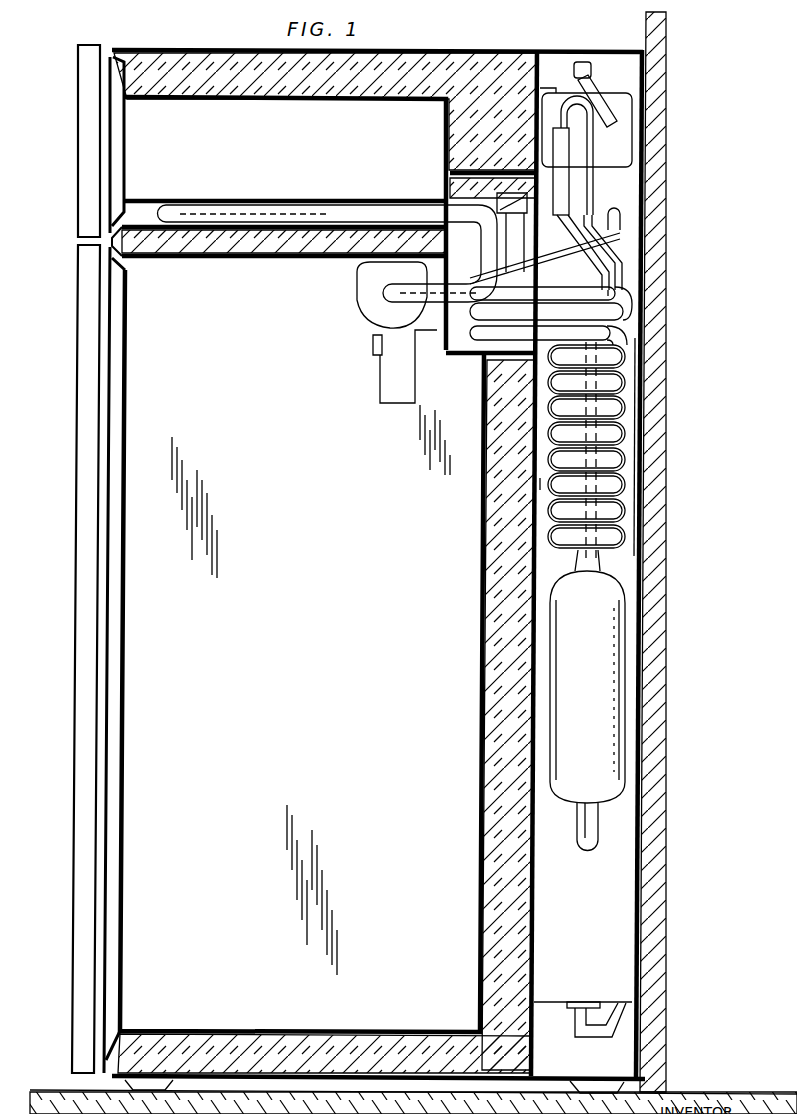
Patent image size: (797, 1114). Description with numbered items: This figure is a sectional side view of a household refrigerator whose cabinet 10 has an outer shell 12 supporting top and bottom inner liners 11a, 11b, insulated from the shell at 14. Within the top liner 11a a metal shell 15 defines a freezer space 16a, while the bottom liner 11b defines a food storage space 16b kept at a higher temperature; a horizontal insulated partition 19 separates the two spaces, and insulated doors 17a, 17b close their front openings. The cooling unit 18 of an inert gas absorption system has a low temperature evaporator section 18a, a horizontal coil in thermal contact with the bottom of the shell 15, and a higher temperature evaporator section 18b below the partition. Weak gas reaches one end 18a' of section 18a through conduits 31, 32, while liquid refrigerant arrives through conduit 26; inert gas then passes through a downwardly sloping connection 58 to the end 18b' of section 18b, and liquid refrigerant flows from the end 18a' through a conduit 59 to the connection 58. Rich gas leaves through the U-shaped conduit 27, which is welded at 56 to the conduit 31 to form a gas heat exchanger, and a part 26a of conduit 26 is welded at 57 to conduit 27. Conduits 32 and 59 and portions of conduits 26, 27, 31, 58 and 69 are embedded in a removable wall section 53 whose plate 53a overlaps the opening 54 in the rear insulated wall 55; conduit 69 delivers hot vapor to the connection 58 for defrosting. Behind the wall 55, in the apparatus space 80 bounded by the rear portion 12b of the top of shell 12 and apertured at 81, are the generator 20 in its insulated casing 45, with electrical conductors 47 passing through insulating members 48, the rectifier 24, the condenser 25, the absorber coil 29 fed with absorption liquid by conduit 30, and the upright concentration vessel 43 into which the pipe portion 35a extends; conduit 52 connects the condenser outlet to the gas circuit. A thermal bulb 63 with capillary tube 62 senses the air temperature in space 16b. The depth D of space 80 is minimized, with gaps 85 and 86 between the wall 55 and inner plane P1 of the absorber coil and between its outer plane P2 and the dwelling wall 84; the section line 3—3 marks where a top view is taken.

The cabinet 10 is at (75, 55).
The outer shell 12 is at (167, 48).
The rear portion of the top of the outer shell 12b is at (552, 52).
The insulation 14 is at (226, 49).
The metal shell 15 is at (209, 100).
The freezer space 16a is at (292, 159).
The food storage space 16b is at (312, 529).
The top inner liner 11a is at (122, 105).
The bottom inner liner 11b is at (482, 665).
The insulated door 17a is at (78, 182).
The insulated door 17b is at (77, 385).
The cooling unit 18 is at (478, 201).
The low temperature evaporator section 18a is at (328, 240).
The end of low temperature evaporator section 18a' is at (413, 154).
The higher temperature evaporator section 18b is at (354, 295).
The end of higher temperature evaporator section 18b' is at (361, 337).
The horizontal insulated partition 19 is at (244, 245).
The generator 20 is at (618, 845).
The air-cooled rectifier 24 is at (586, 60).
The air-cooled condenser 25 is at (600, 133).
The conduit 26 is at (622, 262).
The part of conduit 26 26a is at (615, 297).
The U-shaped conduit 27 is at (632, 306).
The absorber coil 29 is at (625, 418).
The conduit 30 is at (628, 358).
The U-shaped conduit 31 is at (447, 365).
The conduit 32 is at (565, 207).
The pipe section 35a is at (580, 852).
The upright vessel 43 is at (625, 755).
The metal shell 45 is at (638, 930).
The electrical conductors 47 is at (630, 1002).
The apertured insulating members 48 is at (592, 1000).
The conduit 52 is at (590, 207).
The removable wall section 53 is at (499, 170).
The outer rectangular sheet 53a is at (548, 150).
The opening 54 is at (455, 170).
The rear insulated wall 55 is at (518, 510).
The heat conductive connection 56 is at (628, 328).
The heat conductive connection 57 is at (550, 292).
The downwardly sloping connection 58 is at (410, 274).
The conduit 59 is at (470, 255).
The capillary tube 62 is at (395, 405).
The thermal sensitive bulb 63 is at (372, 352).
The conduit 69 is at (622, 228).
The apparatus space 80 is at (632, 1043).
The aperture 81 is at (627, 52).
The wall 84 is at (640, 1020).
The gap 85 is at (540, 483).
The gap 86 is at (634, 515).
The inner plane P1 is at (547, 573).
The outer plane P2 is at (623, 563).
The depth D is at (634, 1052).
The section line 3— 3 is at (488, 44).